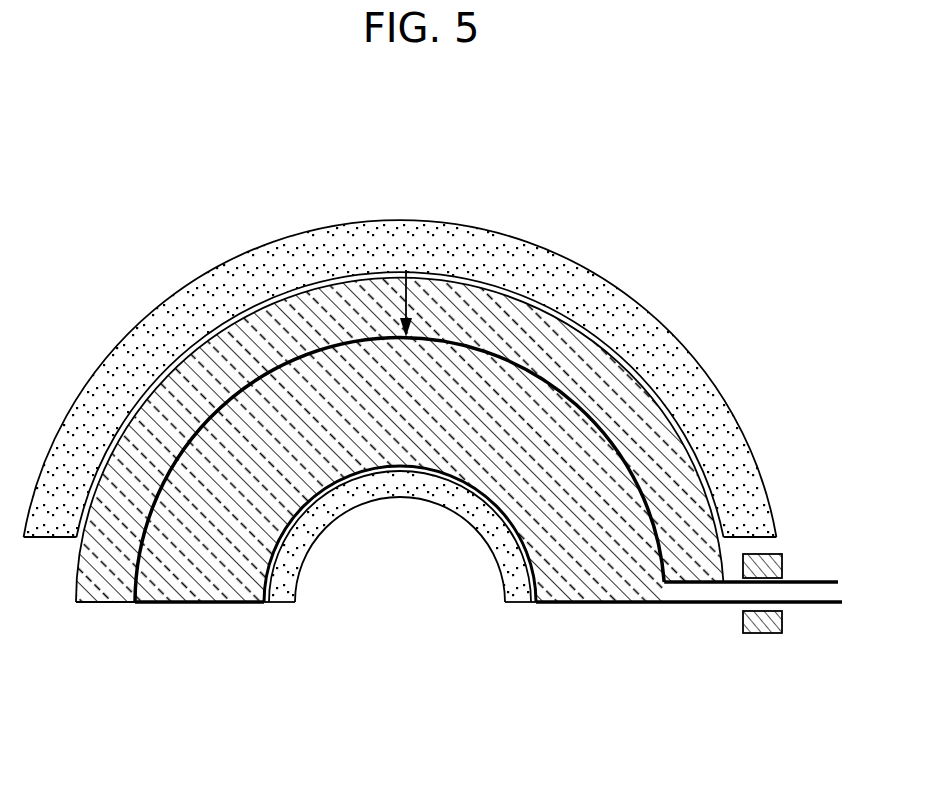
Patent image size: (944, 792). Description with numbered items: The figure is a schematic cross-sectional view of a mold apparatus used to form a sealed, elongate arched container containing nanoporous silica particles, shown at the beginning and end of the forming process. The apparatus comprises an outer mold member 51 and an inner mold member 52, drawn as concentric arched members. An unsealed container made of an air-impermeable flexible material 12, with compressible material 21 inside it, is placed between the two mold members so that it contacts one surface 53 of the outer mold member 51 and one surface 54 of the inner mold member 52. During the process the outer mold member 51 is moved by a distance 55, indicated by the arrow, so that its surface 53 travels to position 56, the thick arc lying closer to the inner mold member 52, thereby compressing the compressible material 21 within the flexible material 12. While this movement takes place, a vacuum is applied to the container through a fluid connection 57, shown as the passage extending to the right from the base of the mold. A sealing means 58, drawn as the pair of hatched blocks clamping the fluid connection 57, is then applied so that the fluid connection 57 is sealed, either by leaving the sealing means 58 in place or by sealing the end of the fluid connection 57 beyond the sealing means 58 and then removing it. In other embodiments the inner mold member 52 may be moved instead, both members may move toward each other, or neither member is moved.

The air-impermeable flexible material 12 is at (157, 380).
The compressible material 21 is at (245, 440).
The outer mold member 51 is at (577, 283).
The inner mold member 52 is at (465, 508).
The surface of the outer mold member 53 is at (293, 288).
The surface of the inner mold member 54 is at (390, 468).
The distance 55 is at (396, 290).
The position 56 is at (522, 367).
The fluid connection 57 is at (810, 604).
The sealing means 58 is at (760, 634).